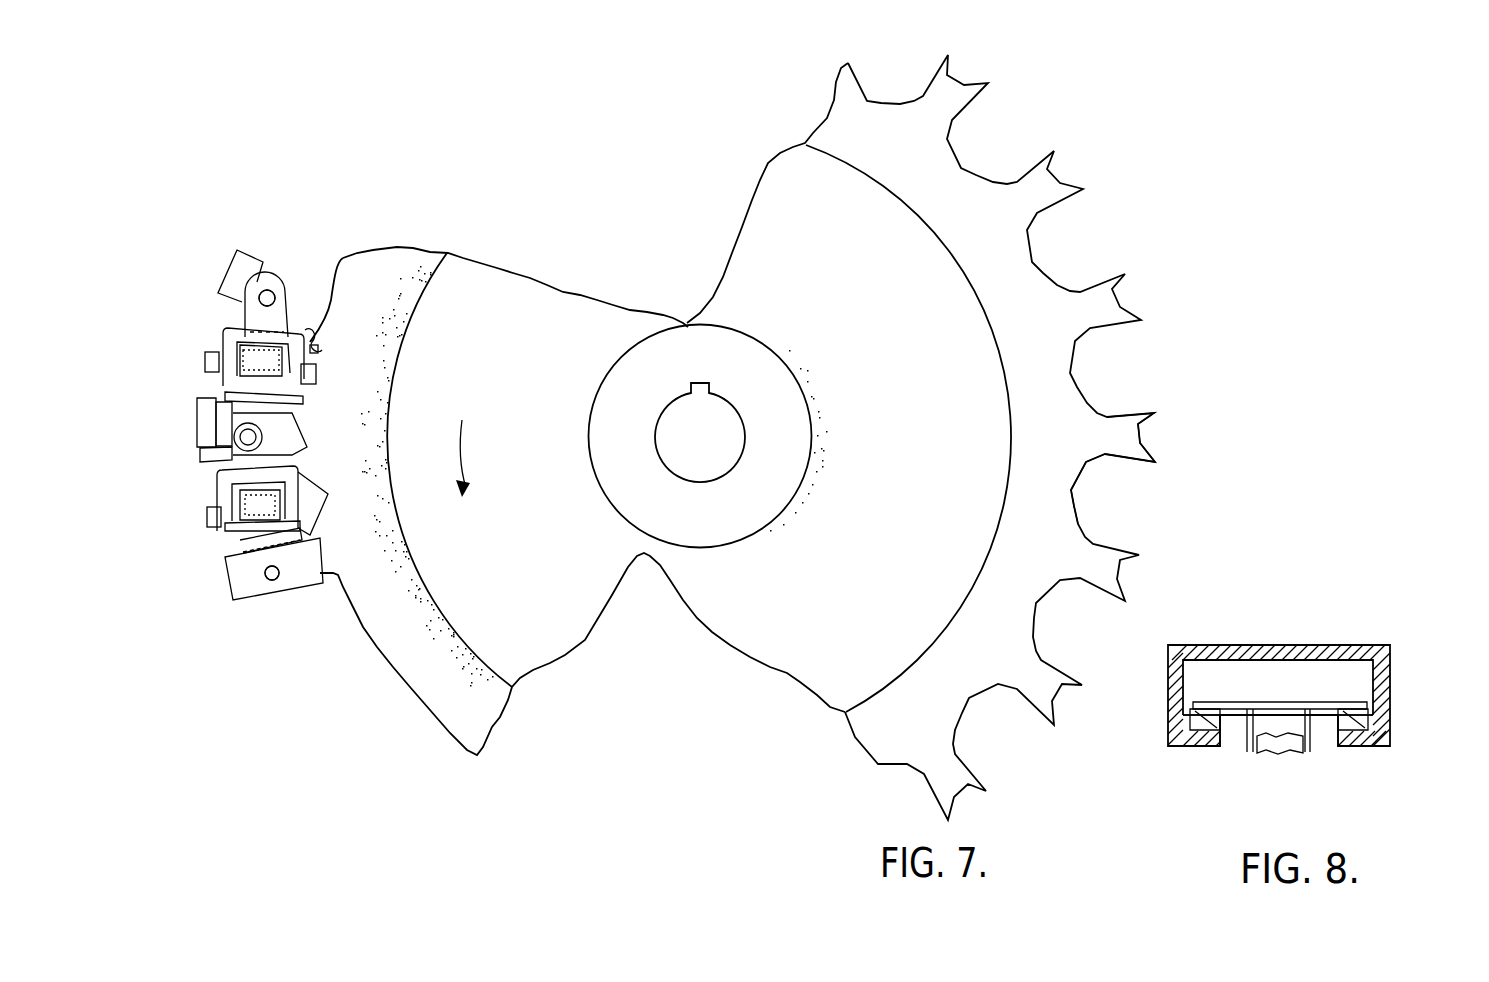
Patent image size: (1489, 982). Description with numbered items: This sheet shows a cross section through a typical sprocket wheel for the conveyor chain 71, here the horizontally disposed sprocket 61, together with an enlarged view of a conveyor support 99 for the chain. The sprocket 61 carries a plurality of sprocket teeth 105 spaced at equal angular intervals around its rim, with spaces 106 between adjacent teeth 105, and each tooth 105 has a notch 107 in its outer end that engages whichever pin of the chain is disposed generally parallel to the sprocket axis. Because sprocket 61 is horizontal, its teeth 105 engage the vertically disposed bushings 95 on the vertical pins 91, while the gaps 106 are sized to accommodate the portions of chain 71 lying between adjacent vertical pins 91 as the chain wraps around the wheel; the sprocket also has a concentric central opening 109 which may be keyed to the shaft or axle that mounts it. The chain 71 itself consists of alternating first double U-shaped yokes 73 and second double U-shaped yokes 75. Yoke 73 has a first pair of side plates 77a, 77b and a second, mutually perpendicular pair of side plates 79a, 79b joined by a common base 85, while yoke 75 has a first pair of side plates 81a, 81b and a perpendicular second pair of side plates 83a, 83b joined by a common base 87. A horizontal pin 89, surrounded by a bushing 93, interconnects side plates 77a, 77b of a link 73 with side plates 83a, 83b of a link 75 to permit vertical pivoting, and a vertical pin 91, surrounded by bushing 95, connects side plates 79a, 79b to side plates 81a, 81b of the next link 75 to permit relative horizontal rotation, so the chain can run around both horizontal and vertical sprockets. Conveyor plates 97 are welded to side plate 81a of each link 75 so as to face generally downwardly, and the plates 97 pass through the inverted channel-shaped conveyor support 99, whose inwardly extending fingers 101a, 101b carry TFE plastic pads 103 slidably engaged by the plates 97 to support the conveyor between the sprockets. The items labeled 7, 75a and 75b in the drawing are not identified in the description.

In FIG. 7, the horizontal sprocket 61 is at (960, 418).
In FIG. 7, the notch 107 is at (1150, 431).
In FIG. 7, the sprocket teeth 105 is at (1135, 458).
In FIG. 7, the spaces between teeth 106 is at (1090, 492).
In FIG. 7, the concentric central opening 109 is at (727, 402).
In FIG. 7, the conveyor plates 97 is at (237, 250).
In FIG. 8, the conveyor plates 97 is at (1352, 700).
In FIG. 7, the pivot hole 7 is at (272, 581).
In FIG. 7, the common base 85 is at (233, 326).
In FIG. 7, the side plate 79a is at (285, 330).
In FIG. 7, the side plate 79b is at (267, 298).
In FIG. 7, the first double U-shaped yoke 73 is at (208, 338).
In FIG. 7, the second double U-shaped yoke 75 is at (212, 393).
In FIG. 7, the side plate 83a is at (242, 385).
In FIG. 7, the side plate 77a is at (216, 356).
In FIG. 7, the side plate 77b is at (306, 372).
In FIG. 7, the bushing 93 is at (318, 334).
In FIG. 7, the horizontal pin 89 is at (306, 397).
In FIG. 7, the side plate 81a is at (205, 421).
In FIG. 7, the side plate 81b is at (224, 424).
In FIG. 7, the common base 87 is at (297, 440).
In FIG. 7, the side plate 83b is at (300, 418).
In FIG. 7, the vertical pin 91 is at (298, 460).
In FIG. 7, the bushing 95 is at (223, 448).
In FIG. 7, the pawl side block 75a is at (208, 512).
In FIG. 7, the pawl wedge 75b is at (316, 486).
In FIG. 8, the conveyor support 99 is at (1333, 645).
In FIG. 8, the TFE plastic pads 103 is at (1190, 718).
In FIG. 8, the inwardly extending finger 101a is at (1185, 748).
In FIG. 8, the inwardly extending finger 101b is at (1363, 748).
In FIG. 8, the chain 71 is at (1297, 762).